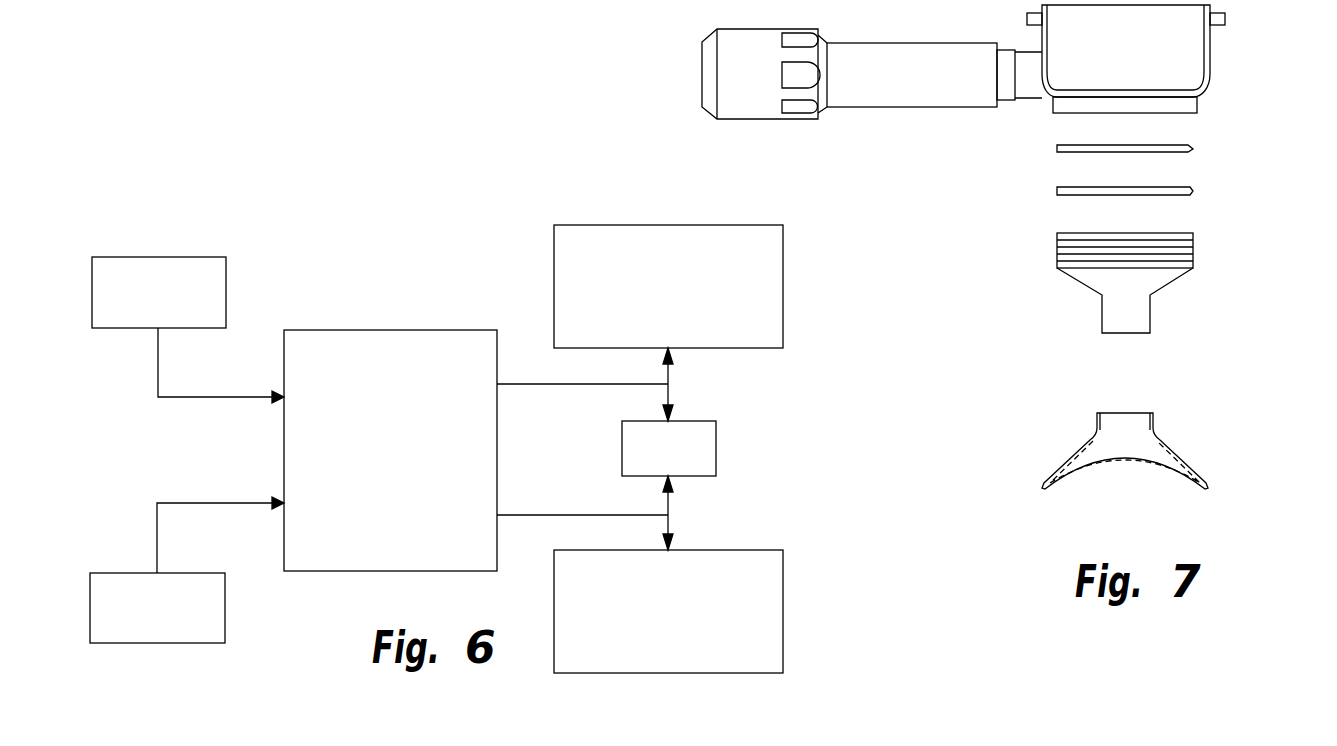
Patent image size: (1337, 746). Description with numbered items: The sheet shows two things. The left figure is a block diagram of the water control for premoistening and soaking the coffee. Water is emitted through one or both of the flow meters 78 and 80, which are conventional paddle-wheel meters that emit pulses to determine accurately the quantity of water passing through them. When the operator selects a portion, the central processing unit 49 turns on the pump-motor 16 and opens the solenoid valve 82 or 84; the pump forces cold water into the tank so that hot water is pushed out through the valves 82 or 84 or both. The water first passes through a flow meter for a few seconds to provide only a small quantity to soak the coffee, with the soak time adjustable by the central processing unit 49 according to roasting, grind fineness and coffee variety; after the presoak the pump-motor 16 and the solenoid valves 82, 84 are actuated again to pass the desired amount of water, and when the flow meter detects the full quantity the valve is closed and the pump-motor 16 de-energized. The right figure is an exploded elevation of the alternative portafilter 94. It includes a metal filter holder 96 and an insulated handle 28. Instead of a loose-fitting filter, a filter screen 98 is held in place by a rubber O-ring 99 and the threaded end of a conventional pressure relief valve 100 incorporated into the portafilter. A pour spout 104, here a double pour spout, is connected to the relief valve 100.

In FIG. 6, the flow meter 78 is at (193, 267).
In FIG. 6, the flow meter 80 is at (193, 633).
In FIG. 6, the central processing unit 49 is at (390, 450).
In FIG. 6, the solenoid valve 82 is at (668, 286).
In FIG. 6, the pump-motor 16 is at (669, 448).
In FIG. 6, the solenoid valve 84 is at (668, 611).
In FIG. 7, the insulated handle 28 is at (917, 88).
In FIG. 7, the portafilter 94 is at (1210, 70).
In FIG. 7, the metal filter holder 96 is at (1198, 98).
In FIG. 7, the filter screen 98 is at (1193, 148).
In FIG. 7, the rubber O-ring 99 is at (1193, 193).
In FIG. 7, the pressure relief valve 100 is at (1147, 278).
In FIG. 7, the pour spout 104 is at (1093, 443).